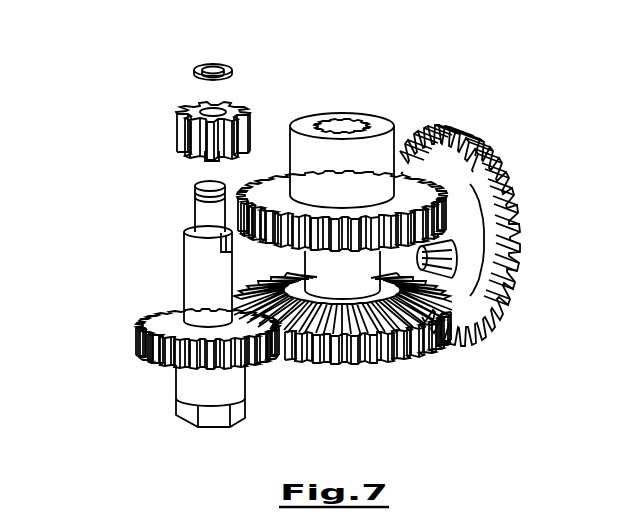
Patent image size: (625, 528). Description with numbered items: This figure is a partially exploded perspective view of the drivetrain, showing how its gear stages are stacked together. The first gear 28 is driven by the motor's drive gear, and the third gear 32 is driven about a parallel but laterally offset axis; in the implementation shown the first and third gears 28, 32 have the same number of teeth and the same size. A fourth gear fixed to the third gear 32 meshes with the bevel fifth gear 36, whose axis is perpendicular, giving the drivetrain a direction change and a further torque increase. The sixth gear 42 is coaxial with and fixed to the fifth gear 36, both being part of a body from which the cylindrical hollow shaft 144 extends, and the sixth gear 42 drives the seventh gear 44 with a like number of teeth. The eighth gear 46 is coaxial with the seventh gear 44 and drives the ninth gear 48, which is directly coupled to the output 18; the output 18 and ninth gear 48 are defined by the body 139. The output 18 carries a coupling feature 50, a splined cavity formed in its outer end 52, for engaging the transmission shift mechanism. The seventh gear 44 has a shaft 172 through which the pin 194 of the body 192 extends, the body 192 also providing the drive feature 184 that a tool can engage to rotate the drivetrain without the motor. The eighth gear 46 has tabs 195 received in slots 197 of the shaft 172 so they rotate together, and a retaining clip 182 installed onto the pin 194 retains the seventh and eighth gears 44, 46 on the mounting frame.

The output 18 is at (291, 105).
The first gear 28 is at (412, 125).
The third gear 32 is at (497, 210).
The fifth gear 36 is at (402, 329).
The sixth gear 42 is at (365, 352).
The seventh gear 44 is at (143, 344).
The eighth gear 46 is at (183, 135).
The ninth gear 48 is at (262, 197).
The coupling feature 50 is at (343, 123).
The outer end 52 is at (312, 120).
The body 139 is at (284, 158).
The shaft 144 is at (362, 289).
The shaft 172 is at (197, 272).
The retaining clip 182 is at (196, 68).
The drive feature 184 is at (215, 428).
The body 192 is at (156, 401).
The pin 194 is at (193, 202).
The tabs 195 is at (193, 163).
The slots 197 is at (228, 255).